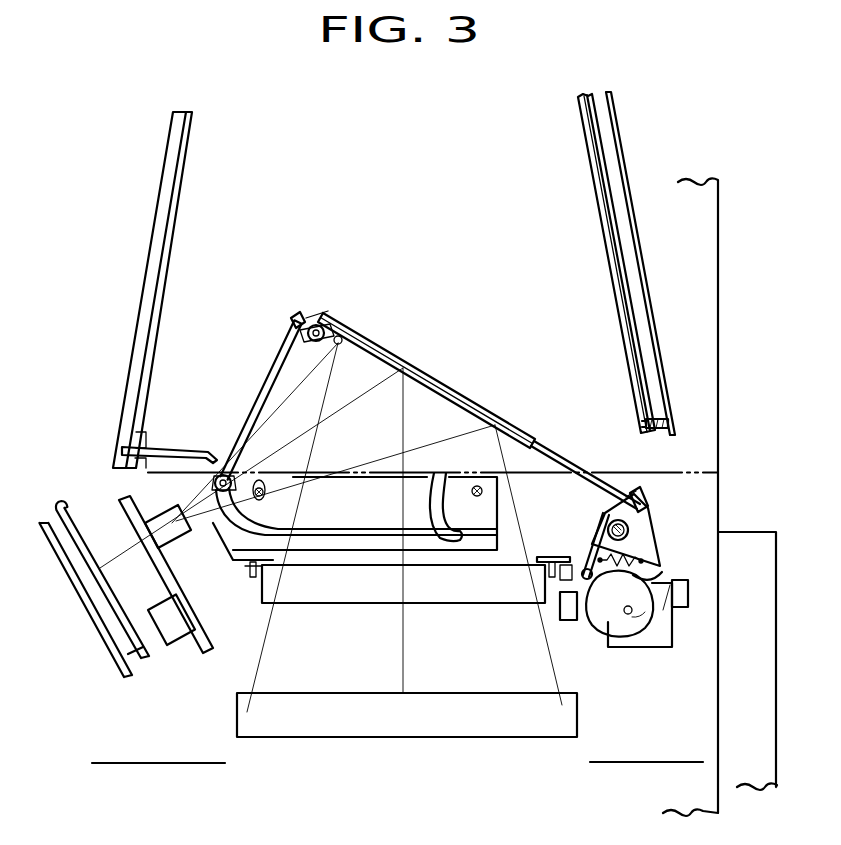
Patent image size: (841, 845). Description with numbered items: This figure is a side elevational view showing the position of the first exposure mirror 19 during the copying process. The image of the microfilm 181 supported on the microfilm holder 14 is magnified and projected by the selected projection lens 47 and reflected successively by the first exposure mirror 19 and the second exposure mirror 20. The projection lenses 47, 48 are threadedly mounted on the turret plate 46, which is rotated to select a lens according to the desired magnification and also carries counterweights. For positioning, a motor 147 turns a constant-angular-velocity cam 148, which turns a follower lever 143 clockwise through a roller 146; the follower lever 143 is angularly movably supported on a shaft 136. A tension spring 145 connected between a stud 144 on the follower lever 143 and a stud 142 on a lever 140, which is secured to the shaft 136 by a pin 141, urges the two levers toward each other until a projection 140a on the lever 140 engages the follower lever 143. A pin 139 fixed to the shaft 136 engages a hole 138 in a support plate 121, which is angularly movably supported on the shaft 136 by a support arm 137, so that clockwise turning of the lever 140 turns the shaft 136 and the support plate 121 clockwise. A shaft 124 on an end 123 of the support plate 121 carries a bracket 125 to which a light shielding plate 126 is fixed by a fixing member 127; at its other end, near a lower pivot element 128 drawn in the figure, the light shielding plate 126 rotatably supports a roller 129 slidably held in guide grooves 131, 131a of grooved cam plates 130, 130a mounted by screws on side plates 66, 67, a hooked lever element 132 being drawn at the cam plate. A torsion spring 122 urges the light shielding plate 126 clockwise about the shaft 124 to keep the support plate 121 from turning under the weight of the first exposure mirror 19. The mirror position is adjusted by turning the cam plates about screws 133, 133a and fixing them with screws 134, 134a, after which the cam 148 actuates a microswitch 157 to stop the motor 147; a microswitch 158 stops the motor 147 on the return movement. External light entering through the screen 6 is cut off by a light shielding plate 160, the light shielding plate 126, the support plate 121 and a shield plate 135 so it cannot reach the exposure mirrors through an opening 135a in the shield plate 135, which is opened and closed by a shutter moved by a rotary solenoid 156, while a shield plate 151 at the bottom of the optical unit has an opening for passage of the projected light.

The screen 6 is at (177, 222).
The microfilm holder 14 is at (85, 595).
The first exposure mirror 19 is at (426, 364).
The second exposure mirror 20 is at (346, 737).
The turret plate 46 is at (200, 644).
The projection lens 47 is at (168, 539).
The projection lens 48 is at (162, 608).
The side plate 66 is at (718, 482).
The side plate 67 is at (730, 497).
The support plate 121 is at (569, 464).
The torsion spring 122 is at (300, 338).
The end of support plate 123 is at (345, 301).
The shaft 124 is at (341, 336).
The bracket 125 is at (311, 320).
The light shielding plate 126 is at (265, 390).
The fixing member 127 is at (293, 318).
The lower pivot 128 is at (213, 491).
The roller 129 is at (232, 471).
The grooved cam plate 130 is at (475, 550).
The grooved cam plate 130a is at (367, 556).
The guide groove 131 is at (321, 539).
The guide groove 131a is at (356, 513).
The hook lever 132 is at (440, 478).
The screw 133 is at (482, 490).
The screw 133a is at (524, 448).
The screw 134 is at (288, 476).
The screw 134a is at (329, 471).
The shield plate 135 is at (542, 568).
The opening 135a is at (358, 552).
The shaft 136 is at (632, 530).
The support arm 137 is at (643, 518).
The hole 138 is at (637, 492).
The pin 139 is at (650, 488).
The lever 140 is at (640, 541).
The projection 140a is at (670, 573).
The pin 141 is at (612, 515).
The stud 142 is at (646, 560).
The follower lever 143 is at (604, 545).
The stud 144 is at (600, 564).
The tension spring 145 is at (621, 567).
The roller 146 is at (608, 578).
The motor 147 is at (636, 646).
The constant-angular-velocity cam 148 is at (602, 620).
The shield plate 151 is at (612, 763).
The rotary solenoid 156 is at (574, 566).
The microswitch 157 is at (566, 621).
The microswitch 158 is at (680, 608).
The light shielding plate 160 is at (177, 452).
The microfilm 181 is at (60, 527).